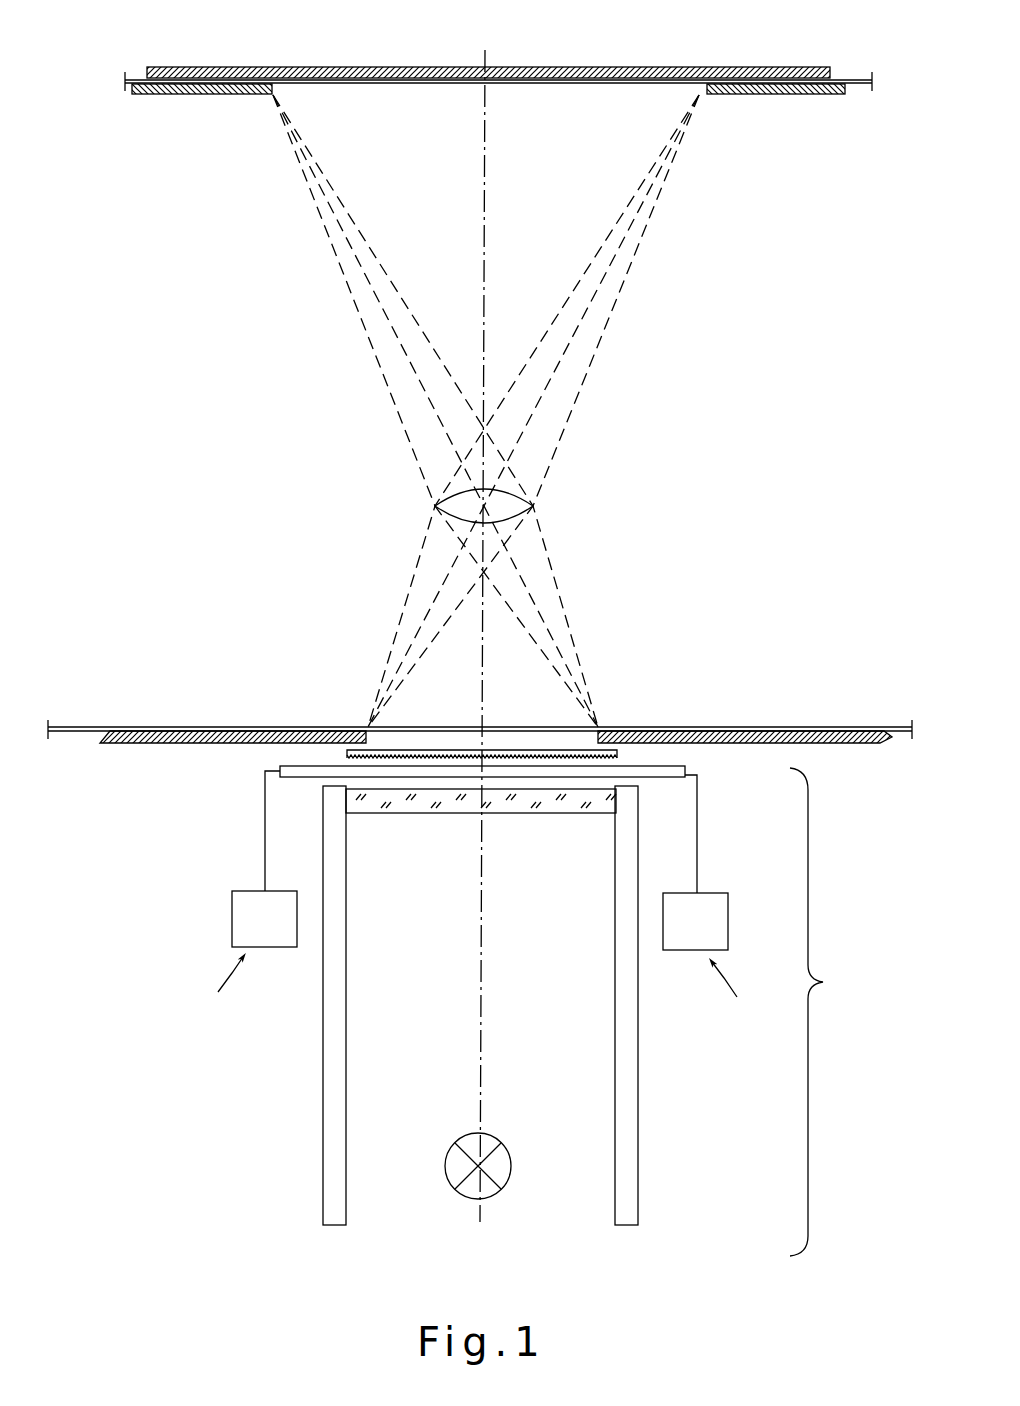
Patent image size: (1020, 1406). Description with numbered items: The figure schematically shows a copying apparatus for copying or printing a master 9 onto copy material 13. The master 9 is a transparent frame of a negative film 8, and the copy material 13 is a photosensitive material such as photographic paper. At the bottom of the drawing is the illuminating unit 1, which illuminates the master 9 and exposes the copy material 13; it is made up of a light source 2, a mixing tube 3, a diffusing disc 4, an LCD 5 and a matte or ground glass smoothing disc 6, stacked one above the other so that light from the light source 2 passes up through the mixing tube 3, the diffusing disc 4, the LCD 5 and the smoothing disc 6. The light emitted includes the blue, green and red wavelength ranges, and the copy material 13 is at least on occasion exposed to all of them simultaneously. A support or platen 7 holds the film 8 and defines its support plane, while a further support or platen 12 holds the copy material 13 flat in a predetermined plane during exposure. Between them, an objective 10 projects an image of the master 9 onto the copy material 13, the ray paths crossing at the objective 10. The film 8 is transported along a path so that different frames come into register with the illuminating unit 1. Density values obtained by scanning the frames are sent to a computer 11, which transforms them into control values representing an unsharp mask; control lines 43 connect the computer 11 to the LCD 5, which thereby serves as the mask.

The illuminating unit 1 is at (818, 1012).
The light source 2 is at (496, 1194).
The mixing tube 3 is at (480, 1005).
The diffusing disc 4 is at (481, 837).
The LCD 5 is at (673, 766).
The smoothing disc 6 is at (482, 719).
The support 7 is at (233, 774).
The negative film 8 is at (745, 711).
The master 9 is at (480, 701).
The objective 10 is at (534, 513).
The computer 11 is at (277, 932).
The support 12 is at (271, 67).
The copy material 13 is at (860, 82).
The control lines 43 is at (481, 832).